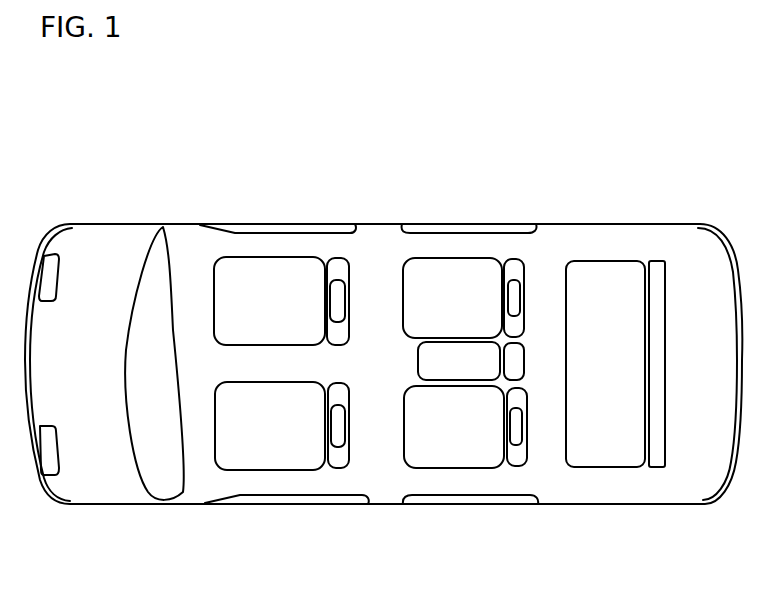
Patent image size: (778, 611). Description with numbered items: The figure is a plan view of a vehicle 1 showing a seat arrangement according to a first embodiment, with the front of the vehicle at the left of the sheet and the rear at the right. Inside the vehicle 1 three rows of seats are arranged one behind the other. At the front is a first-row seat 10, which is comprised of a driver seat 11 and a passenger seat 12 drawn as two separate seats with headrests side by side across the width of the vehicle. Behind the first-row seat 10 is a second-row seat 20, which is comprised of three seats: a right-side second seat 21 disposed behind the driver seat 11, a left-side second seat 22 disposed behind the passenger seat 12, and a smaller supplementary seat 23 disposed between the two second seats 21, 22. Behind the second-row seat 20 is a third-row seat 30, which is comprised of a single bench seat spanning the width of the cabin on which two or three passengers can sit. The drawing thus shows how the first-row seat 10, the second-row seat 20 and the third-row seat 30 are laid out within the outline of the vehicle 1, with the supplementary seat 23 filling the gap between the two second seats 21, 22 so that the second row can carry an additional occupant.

The vehicle 1 is at (93, 245).
The first-row seat 10 is at (293, 247).
The driver seat 11 is at (242, 283).
The passenger seat 12 is at (248, 452).
The second-row seat 20 is at (468, 248).
The right-side second seat 21 is at (427, 277).
The left-side second seat 22 is at (455, 450).
The supplementary seat 23 is at (440, 365).
The third-row seat 30 is at (612, 283).